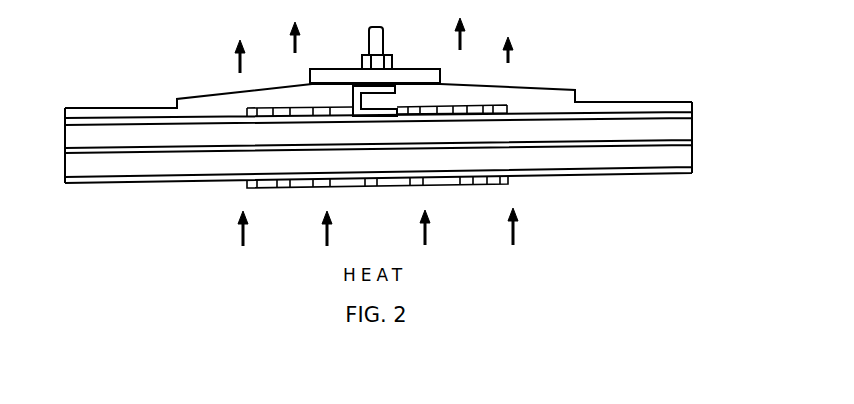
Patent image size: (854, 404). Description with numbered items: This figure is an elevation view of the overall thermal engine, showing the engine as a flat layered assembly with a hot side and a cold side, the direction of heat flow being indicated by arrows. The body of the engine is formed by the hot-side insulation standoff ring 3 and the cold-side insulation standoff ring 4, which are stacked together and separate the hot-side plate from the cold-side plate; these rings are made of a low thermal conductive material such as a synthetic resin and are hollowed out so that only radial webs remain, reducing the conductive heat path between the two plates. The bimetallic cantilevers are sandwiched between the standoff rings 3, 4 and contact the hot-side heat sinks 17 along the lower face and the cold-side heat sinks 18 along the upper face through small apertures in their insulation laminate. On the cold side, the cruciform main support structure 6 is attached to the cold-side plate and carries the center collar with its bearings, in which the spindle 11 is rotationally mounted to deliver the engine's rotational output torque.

The hot-side insulation standoff ring 3 is at (693, 157).
The cold-side insulation standoff ring 4 is at (693, 125).
The cruciform main support structure 6 is at (352, 101).
The spindle 11 is at (384, 40).
The hot-side heat sinks 17 is at (480, 188).
The cold-side heat sinks 18 is at (482, 107).